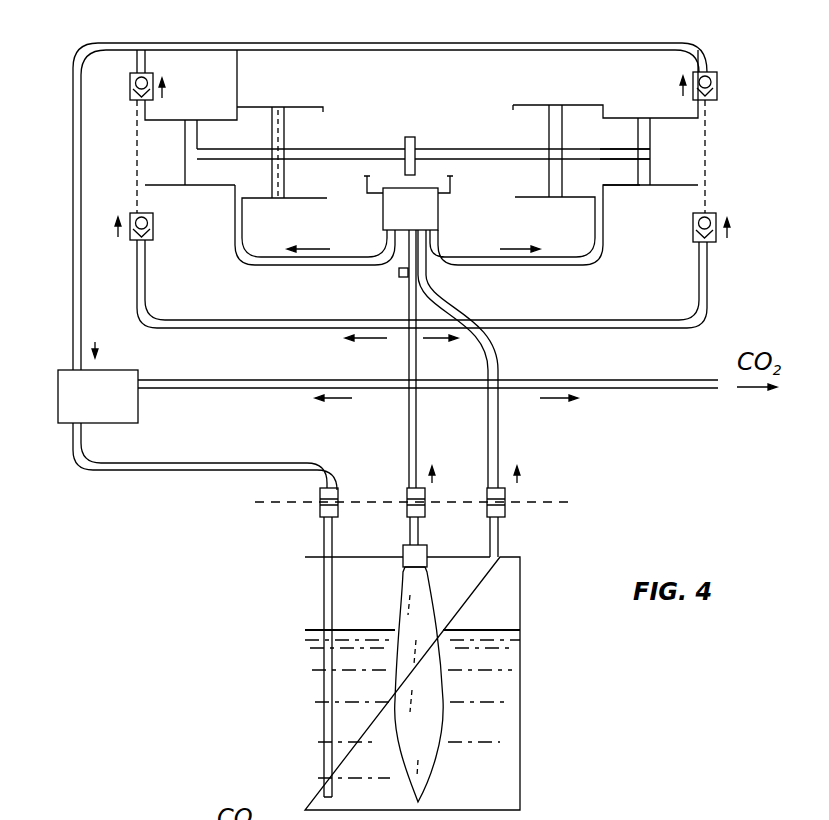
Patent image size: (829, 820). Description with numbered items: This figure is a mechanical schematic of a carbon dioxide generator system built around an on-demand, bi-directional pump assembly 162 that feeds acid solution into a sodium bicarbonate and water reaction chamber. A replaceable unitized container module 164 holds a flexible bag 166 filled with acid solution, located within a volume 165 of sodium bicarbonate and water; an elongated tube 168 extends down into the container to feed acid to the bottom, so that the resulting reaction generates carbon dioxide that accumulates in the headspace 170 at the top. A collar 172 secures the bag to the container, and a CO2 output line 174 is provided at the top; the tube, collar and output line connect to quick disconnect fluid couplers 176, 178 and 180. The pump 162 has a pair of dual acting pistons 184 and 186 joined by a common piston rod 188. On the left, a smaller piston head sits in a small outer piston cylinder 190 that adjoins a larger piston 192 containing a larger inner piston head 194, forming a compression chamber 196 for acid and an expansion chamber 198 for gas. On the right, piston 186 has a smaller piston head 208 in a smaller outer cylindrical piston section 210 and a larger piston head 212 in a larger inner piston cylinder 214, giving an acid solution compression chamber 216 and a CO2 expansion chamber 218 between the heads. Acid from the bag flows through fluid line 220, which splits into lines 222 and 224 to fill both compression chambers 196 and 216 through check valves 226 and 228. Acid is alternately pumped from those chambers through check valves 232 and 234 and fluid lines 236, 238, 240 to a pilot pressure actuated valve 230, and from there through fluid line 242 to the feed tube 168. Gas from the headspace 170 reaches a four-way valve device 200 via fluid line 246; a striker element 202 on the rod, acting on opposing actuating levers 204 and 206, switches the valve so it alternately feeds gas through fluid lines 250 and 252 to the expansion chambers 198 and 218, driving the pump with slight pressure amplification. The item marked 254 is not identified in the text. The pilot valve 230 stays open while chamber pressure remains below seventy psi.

The bi-directional pump assembly 162 is at (465, 91).
The replaceable unitized container module 164 is at (521, 712).
The volume of sodium bicarbonate and water 165 is at (510, 663).
The flexible bag 166 is at (440, 768).
The elongated tube 168 is at (323, 590).
The headspace 170 is at (493, 605).
The collar 172 is at (424, 550).
The CO2 output line 174 is at (499, 540).
The quick disconnect fluid coupler 176 is at (338, 492).
The quick disconnect fluid coupler 178 is at (425, 497).
The quick disconnect fluid coupler 180 is at (507, 497).
The dual acting piston 184 is at (237, 105).
The dual acting piston 186 is at (605, 104).
The common piston rod 188 is at (197, 138).
The outer piston cylinder 190 is at (165, 186).
The larger piston 192 is at (278, 105).
The inner piston head 194 is at (286, 140).
The compression chamber 196 is at (157, 150).
The expansion chamber 198 is at (255, 190).
The four-way valve device 200 is at (440, 214).
The striker element 202 is at (416, 141).
The actuating lever 204 is at (453, 183).
The actuating lever 206 is at (366, 178).
The piston head 208 is at (651, 155).
The outer cylindrical piston section 210 is at (626, 118).
The piston head 212 is at (558, 118).
The inner piston cylinder 214 is at (572, 194).
The acid solution compression chamber 216 is at (705, 164).
The CO2 expansion chamber 218 is at (615, 182).
The fluid line 220 is at (409, 368).
The line 222 is at (210, 320).
The line 224 is at (645, 319).
The check valve 226 is at (133, 242).
The check valve 228 is at (712, 244).
The pilot pressure actuated valve 230 is at (139, 405).
The check valve 232 is at (137, 88).
The check valve 234 is at (718, 80).
The fluid line 236 is at (147, 62).
The fluid line 238 is at (478, 46).
The fluid line 240 is at (73, 200).
The fluid line 242 is at (168, 472).
The fluid line 246 is at (432, 305).
The fluid line 250 is at (325, 266).
The fluid line 252 is at (440, 254).
The sensor 254 is at (401, 277).